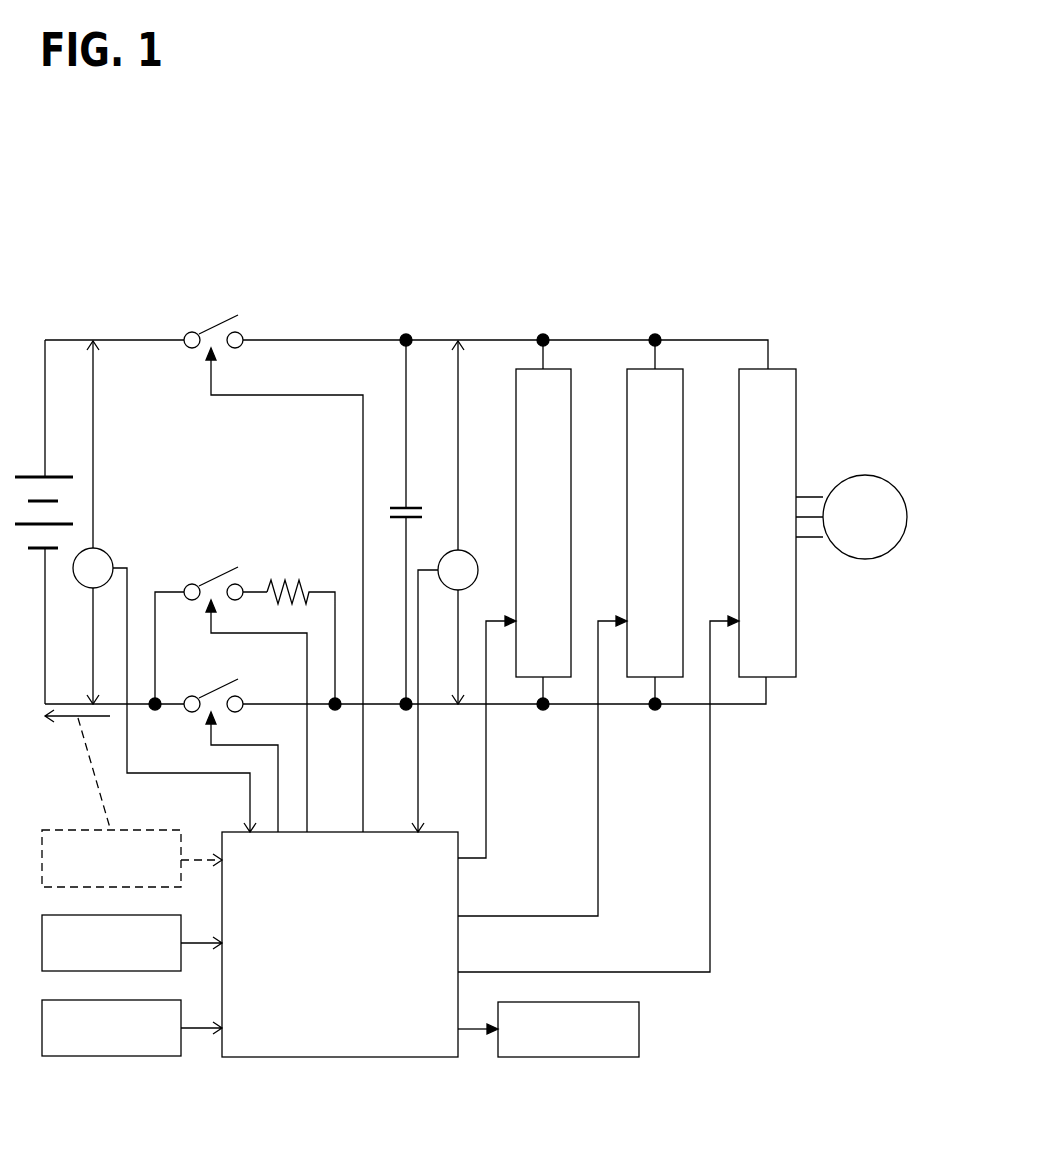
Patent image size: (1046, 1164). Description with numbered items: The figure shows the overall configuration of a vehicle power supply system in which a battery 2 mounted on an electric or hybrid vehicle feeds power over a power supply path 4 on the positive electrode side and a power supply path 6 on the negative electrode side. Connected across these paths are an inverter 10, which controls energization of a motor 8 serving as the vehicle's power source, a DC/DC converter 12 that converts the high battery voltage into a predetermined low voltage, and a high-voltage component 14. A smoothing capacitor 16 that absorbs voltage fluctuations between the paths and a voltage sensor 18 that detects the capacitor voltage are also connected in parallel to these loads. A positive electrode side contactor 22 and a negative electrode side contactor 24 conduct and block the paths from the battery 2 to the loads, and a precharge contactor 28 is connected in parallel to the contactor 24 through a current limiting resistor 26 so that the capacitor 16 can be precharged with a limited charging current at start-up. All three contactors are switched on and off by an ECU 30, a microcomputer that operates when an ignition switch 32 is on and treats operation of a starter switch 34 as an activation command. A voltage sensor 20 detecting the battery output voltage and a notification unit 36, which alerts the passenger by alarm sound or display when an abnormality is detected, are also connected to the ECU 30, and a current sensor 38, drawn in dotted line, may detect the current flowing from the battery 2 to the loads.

The battery 2 is at (58, 473).
The power supply path on the positive electrode side 4 is at (393, 337).
The power supply path on the negative electrode side 6 is at (389, 707).
The motor 8 is at (866, 477).
The inverter 10 is at (798, 410).
The DC/DC converter 12 is at (574, 410).
The high-voltage component 14 is at (686, 410).
The smoothing capacitor 16 is at (414, 498).
The voltage sensor 18 is at (465, 553).
The voltage sensor 20 is at (103, 553).
The positive electrode side contactor 22 is at (213, 318).
The negative electrode side contactor 24 is at (213, 683).
The current limiting resistor 26 is at (283, 578).
The precharge contactor 28 is at (213, 572).
The ECU 30 is at (436, 830).
The ignition switch 32 is at (58, 913).
The starter switch 34 is at (58, 998).
The notification unit 36 is at (640, 1015).
The current sensor 38 is at (58, 828).